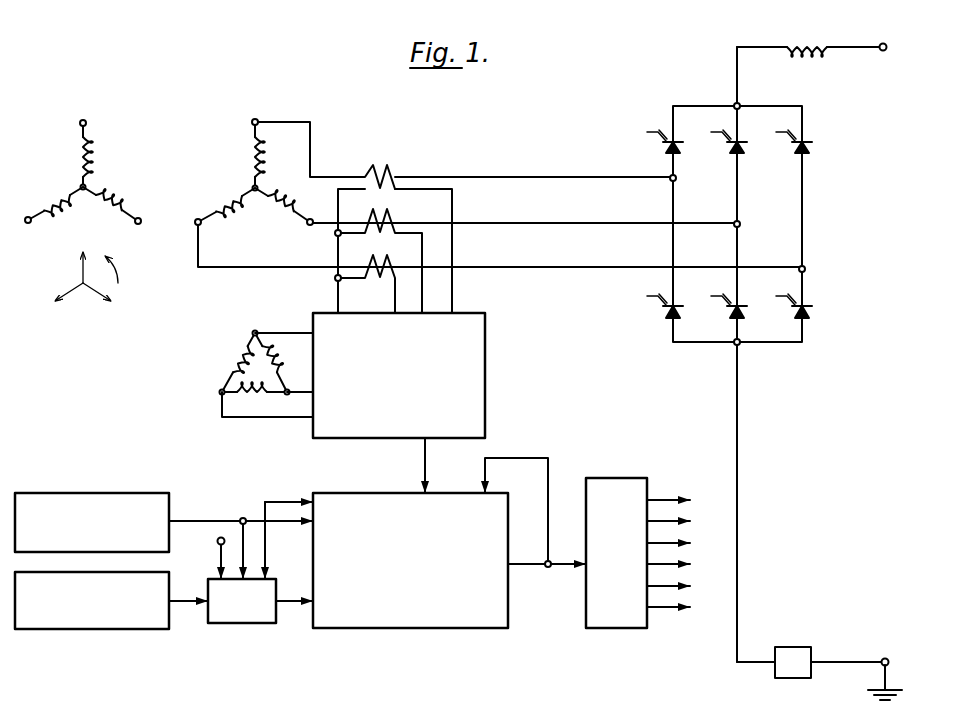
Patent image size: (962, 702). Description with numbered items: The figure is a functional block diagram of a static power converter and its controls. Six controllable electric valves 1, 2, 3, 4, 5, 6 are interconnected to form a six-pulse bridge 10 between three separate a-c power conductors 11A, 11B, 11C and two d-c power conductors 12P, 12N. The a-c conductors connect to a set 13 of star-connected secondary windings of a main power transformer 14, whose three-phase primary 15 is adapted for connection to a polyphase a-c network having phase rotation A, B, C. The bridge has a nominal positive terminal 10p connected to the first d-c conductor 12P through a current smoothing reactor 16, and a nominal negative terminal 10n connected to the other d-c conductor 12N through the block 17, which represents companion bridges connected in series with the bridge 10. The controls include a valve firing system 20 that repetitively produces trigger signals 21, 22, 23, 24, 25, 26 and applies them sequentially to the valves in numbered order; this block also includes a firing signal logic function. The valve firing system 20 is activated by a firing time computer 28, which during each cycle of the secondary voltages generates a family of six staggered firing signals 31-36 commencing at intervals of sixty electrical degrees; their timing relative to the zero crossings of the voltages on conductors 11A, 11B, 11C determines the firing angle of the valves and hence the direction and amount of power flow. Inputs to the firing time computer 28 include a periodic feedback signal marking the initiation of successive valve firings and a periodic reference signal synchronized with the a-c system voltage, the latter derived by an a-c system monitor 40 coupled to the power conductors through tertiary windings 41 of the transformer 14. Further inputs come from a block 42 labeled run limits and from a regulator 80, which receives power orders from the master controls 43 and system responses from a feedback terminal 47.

The controllable electric valve 1 is at (684, 147).
The controllable electric valve 2 is at (813, 312).
The controllable electric valve 3 is at (748, 147).
The controllable electric valve 4 is at (684, 312).
The controllable electric valve 5 is at (813, 147).
The controllable electric valve 6 is at (748, 312).
The 6-pulse bridge 10 is at (777, 225).
The nominal positive terminal 10p is at (739, 104).
The nominal negative terminal 10n is at (739, 344).
The a-c power conductor 11A is at (575, 177).
The a-c power conductor 11B is at (575, 223).
The a-c power conductor 11C is at (575, 267).
The d-c power conductor 12P is at (858, 50).
The d-c power conductor 12N is at (846, 660).
The set of star-connected secondary windings 13 is at (268, 226).
The main power transformer 14 is at (182, 168).
The 3-phase primary 15 is at (63, 176).
The current smoothing reactor 16 is at (797, 45).
The companion bridges 17 is at (780, 668).
The valve firing system 20 is at (616, 477).
The trigger signal 21 is at (684, 500).
The trigger signal 22 is at (684, 521).
The trigger signal 23 is at (684, 543).
The trigger signal 24 is at (684, 564).
The trigger signal 25 is at (684, 586).
The trigger signal 26 is at (684, 607).
The firing time computer 28 is at (339, 492).
The firing signals 31-36 is at (547, 577).
The a-c system monitor 40 is at (487, 360).
The tertiary windings 41 is at (224, 359).
The run limits 42 is at (97, 492).
The master controls 43 is at (100, 632).
The feedback terminal 47 is at (217, 541).
The regulator 80 is at (241, 625).